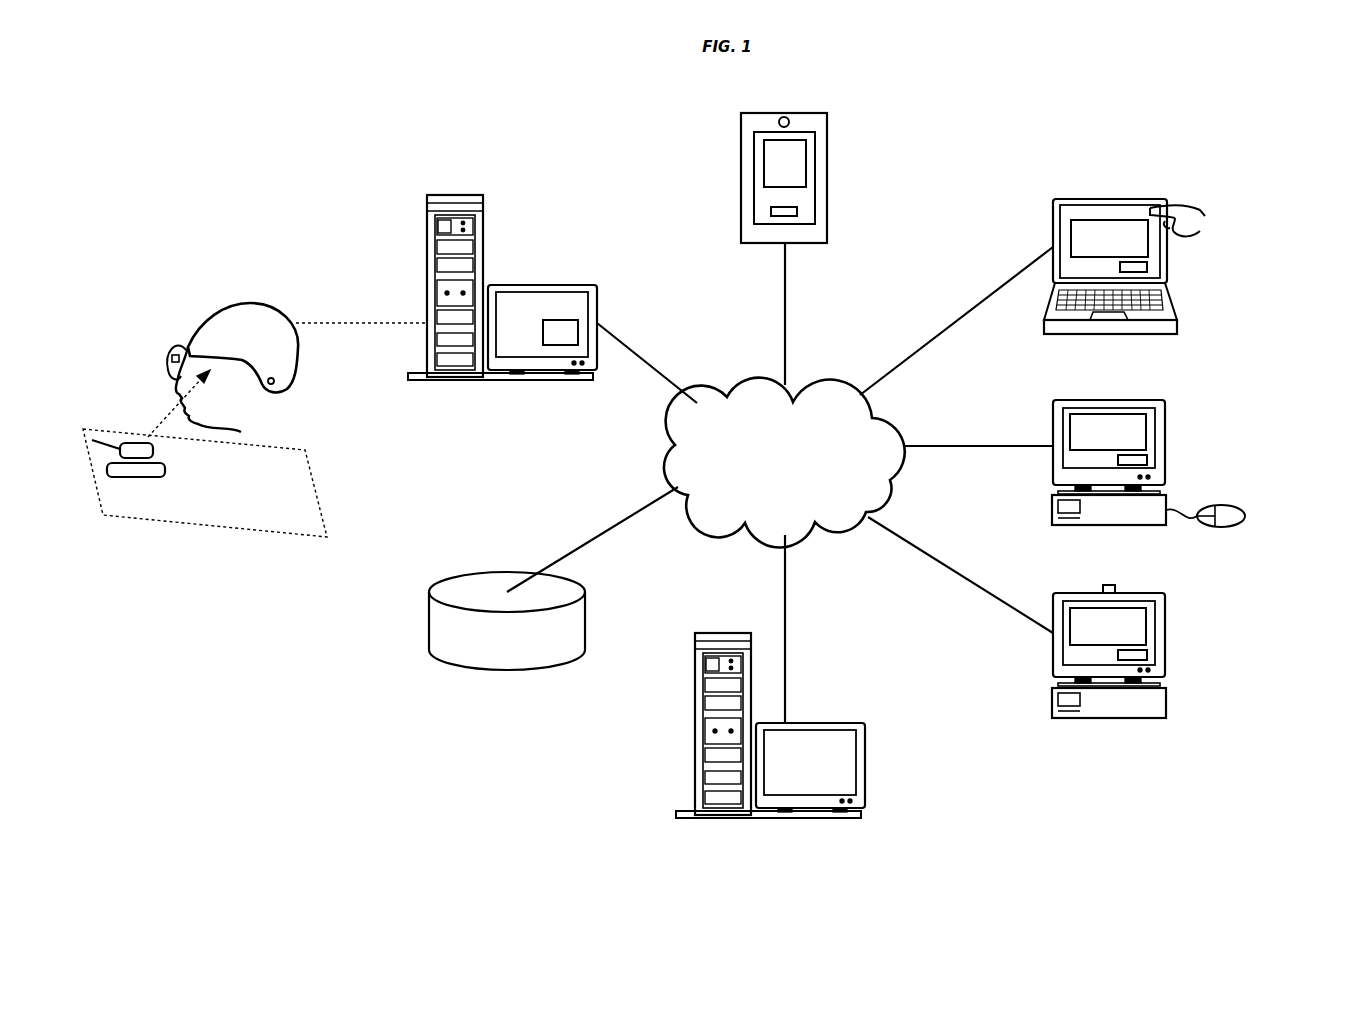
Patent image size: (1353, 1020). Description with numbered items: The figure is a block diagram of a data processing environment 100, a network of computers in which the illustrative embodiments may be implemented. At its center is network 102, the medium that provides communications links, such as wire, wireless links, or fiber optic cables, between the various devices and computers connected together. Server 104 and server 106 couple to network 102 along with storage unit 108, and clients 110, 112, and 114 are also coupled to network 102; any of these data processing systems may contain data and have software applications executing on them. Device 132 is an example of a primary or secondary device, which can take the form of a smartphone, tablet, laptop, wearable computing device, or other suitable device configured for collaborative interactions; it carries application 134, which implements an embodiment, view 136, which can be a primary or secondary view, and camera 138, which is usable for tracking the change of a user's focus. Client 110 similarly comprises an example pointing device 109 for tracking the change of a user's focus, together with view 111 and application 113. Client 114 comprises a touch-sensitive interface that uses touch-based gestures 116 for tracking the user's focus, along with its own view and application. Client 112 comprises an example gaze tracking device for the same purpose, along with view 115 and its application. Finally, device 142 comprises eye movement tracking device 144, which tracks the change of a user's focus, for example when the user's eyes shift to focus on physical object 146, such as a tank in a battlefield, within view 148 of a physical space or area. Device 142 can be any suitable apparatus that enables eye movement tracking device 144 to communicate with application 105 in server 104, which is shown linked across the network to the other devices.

The data processing environment 100 is at (289, 106).
The network 102 is at (771, 476).
The server 104 is at (552, 407).
The application 105 is at (578, 322).
The server 106 is at (819, 845).
The storage unit 108 is at (493, 657).
The pointing device 109 is at (1245, 512).
The client 110 is at (1152, 547).
The view 111 is at (1147, 418).
The client 112 is at (1149, 741).
The application 113 is at (1147, 457).
The client 114 is at (1152, 359).
The view 115 is at (1147, 613).
The touch-based gestures 116 is at (1200, 223).
The device 132 is at (828, 177).
The application 134 is at (798, 207).
The view 136 is at (807, 153).
The camera 138 is at (787, 116).
The device 142 is at (260, 302).
The eye movement tracking device 144 is at (175, 358).
The physical object 146 is at (165, 465).
The view 148 is at (311, 477).